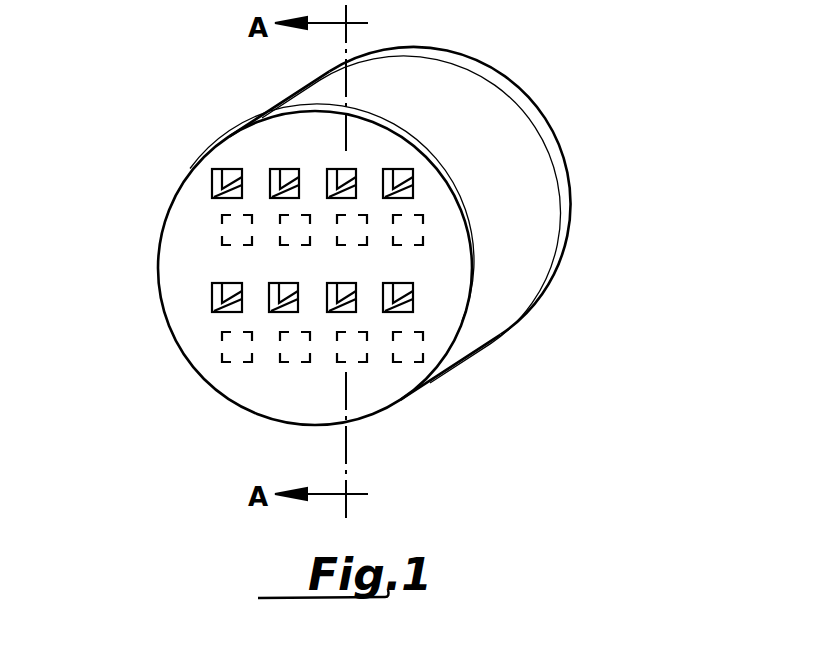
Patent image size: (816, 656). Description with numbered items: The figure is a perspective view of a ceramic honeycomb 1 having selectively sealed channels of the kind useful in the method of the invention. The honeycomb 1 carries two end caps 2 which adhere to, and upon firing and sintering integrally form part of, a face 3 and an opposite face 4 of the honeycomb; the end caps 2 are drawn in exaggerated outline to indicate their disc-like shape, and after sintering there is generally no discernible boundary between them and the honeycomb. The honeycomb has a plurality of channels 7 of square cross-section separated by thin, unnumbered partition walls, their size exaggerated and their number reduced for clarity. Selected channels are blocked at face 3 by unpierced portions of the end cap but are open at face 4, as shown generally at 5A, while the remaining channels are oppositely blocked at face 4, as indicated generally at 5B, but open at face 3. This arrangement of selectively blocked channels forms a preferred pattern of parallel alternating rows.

The honeycomb 1 is at (486, 338).
The end caps 2 is at (543, 111).
The face 3 is at (576, 198).
The face 4 is at (276, 402).
The open channel openings at face 4 5A is at (282, 168).
The blocked channel openings at face 4 5B is at (236, 349).
The channels 7 is at (212, 185).